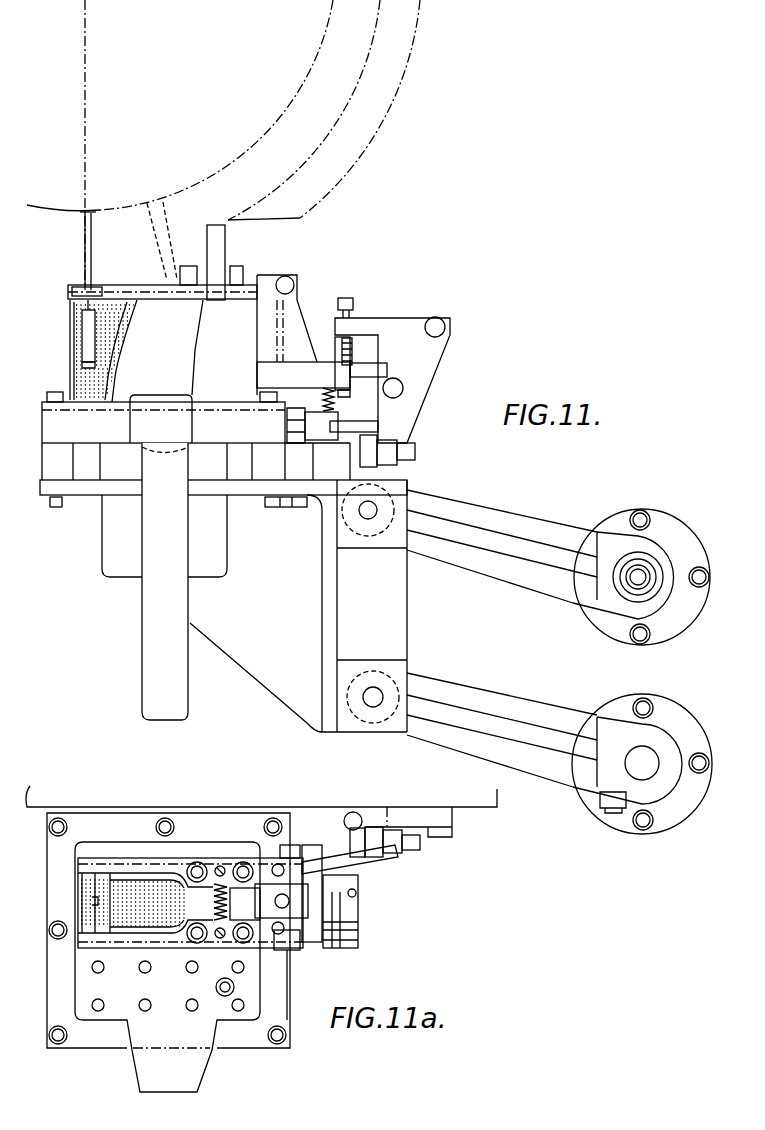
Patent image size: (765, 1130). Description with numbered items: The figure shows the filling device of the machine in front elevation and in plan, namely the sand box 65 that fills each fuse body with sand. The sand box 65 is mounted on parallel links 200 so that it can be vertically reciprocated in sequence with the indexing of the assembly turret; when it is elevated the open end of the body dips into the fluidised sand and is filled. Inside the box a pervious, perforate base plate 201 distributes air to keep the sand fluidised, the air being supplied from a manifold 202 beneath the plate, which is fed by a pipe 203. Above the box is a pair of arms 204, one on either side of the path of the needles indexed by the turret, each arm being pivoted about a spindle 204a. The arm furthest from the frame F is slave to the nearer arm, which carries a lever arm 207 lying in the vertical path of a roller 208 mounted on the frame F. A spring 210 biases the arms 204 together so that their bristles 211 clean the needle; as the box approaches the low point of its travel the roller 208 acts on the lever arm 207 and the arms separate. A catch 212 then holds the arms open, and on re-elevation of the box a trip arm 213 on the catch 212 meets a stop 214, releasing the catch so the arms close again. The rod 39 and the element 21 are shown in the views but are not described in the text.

In FIG. 11A, the piston 21 is at (93, 885).
In FIG. 11, the rod 39 is at (92, 241).
In FIG. 11, the sand container 65 is at (61, 359).
In FIG. 11, the parallel links 200 is at (521, 520).
In FIG. 11, the perforate base plate 201 is at (93, 410).
In FIG. 11A, the perforate base plate 201 is at (195, 1002).
In FIG. 11, the manifold 202 is at (100, 432).
In FIG. 11, the pipe 203 is at (357, 426).
In FIG. 11, the arms 204 is at (152, 292).
In FIG. 11A, the arms 204 is at (119, 867).
In FIG. 11, the spindle 204a is at (281, 312).
In FIG. 11A, the spindle 204a is at (280, 947).
In FIG. 11, the lever arm 207 is at (368, 360).
In FIG. 11A, the lever arm 207 is at (368, 858).
In FIG. 11, the roller 208 is at (365, 453).
In FIG. 11A, the roller 208 is at (398, 855).
In FIG. 11, the spring 210 is at (226, 246).
In FIG. 11A, the spring 210 is at (223, 868).
In FIG. 11, the bristles 211 is at (76, 290).
In FIG. 11A, the catch 212 is at (345, 902).
In FIG. 11A, the trip arm 213 is at (350, 840).
In FIG. 11, the stop 214 is at (353, 352).
In FIG. 11A, the stop 214 is at (353, 812).
In FIG. 11, the frame F is at (100, 550).
In FIG. 11A, the frame F is at (214, 812).